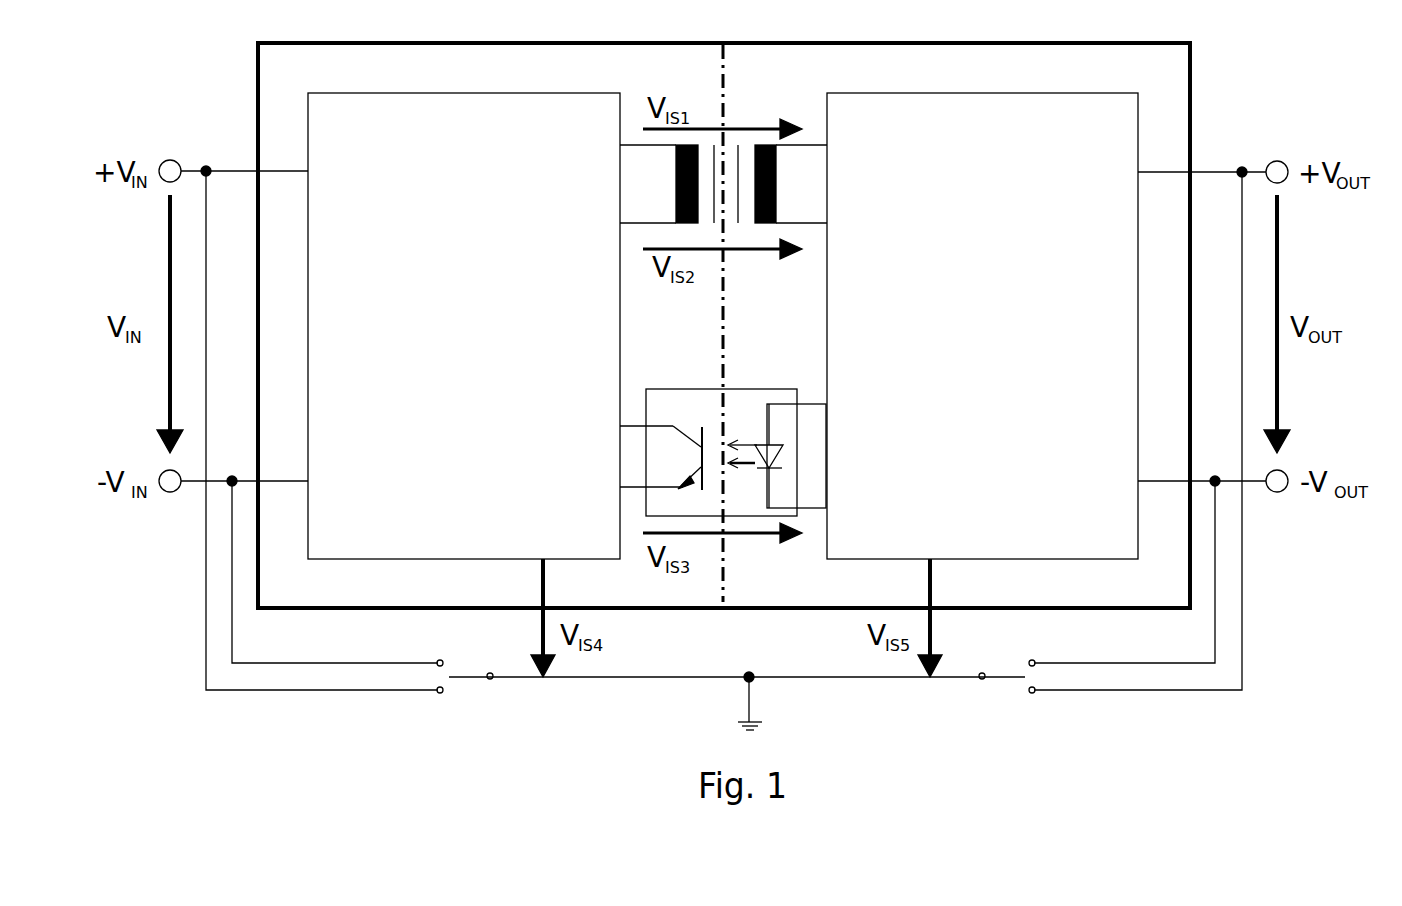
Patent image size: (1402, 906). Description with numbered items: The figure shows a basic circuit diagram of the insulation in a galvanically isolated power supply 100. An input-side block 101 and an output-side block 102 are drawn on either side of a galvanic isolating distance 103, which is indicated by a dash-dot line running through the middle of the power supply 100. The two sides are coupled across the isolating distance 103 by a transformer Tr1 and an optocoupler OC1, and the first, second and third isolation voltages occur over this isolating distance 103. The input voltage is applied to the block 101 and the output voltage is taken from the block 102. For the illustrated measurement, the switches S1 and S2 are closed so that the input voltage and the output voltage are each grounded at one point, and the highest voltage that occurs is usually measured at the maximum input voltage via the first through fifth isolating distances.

The galvanically isolated power supply 100 is at (1190, 38).
The primary side circuit 101 is at (464, 326).
The secondary side circuit 102 is at (982, 326).
The galvanic isolating distance 103 is at (755, 323).
The transformer Tr1 is at (723, 184).
The optocoupler OC1 is at (723, 437).
The switch S1 is at (504, 662).
The switch S2 is at (972, 662).